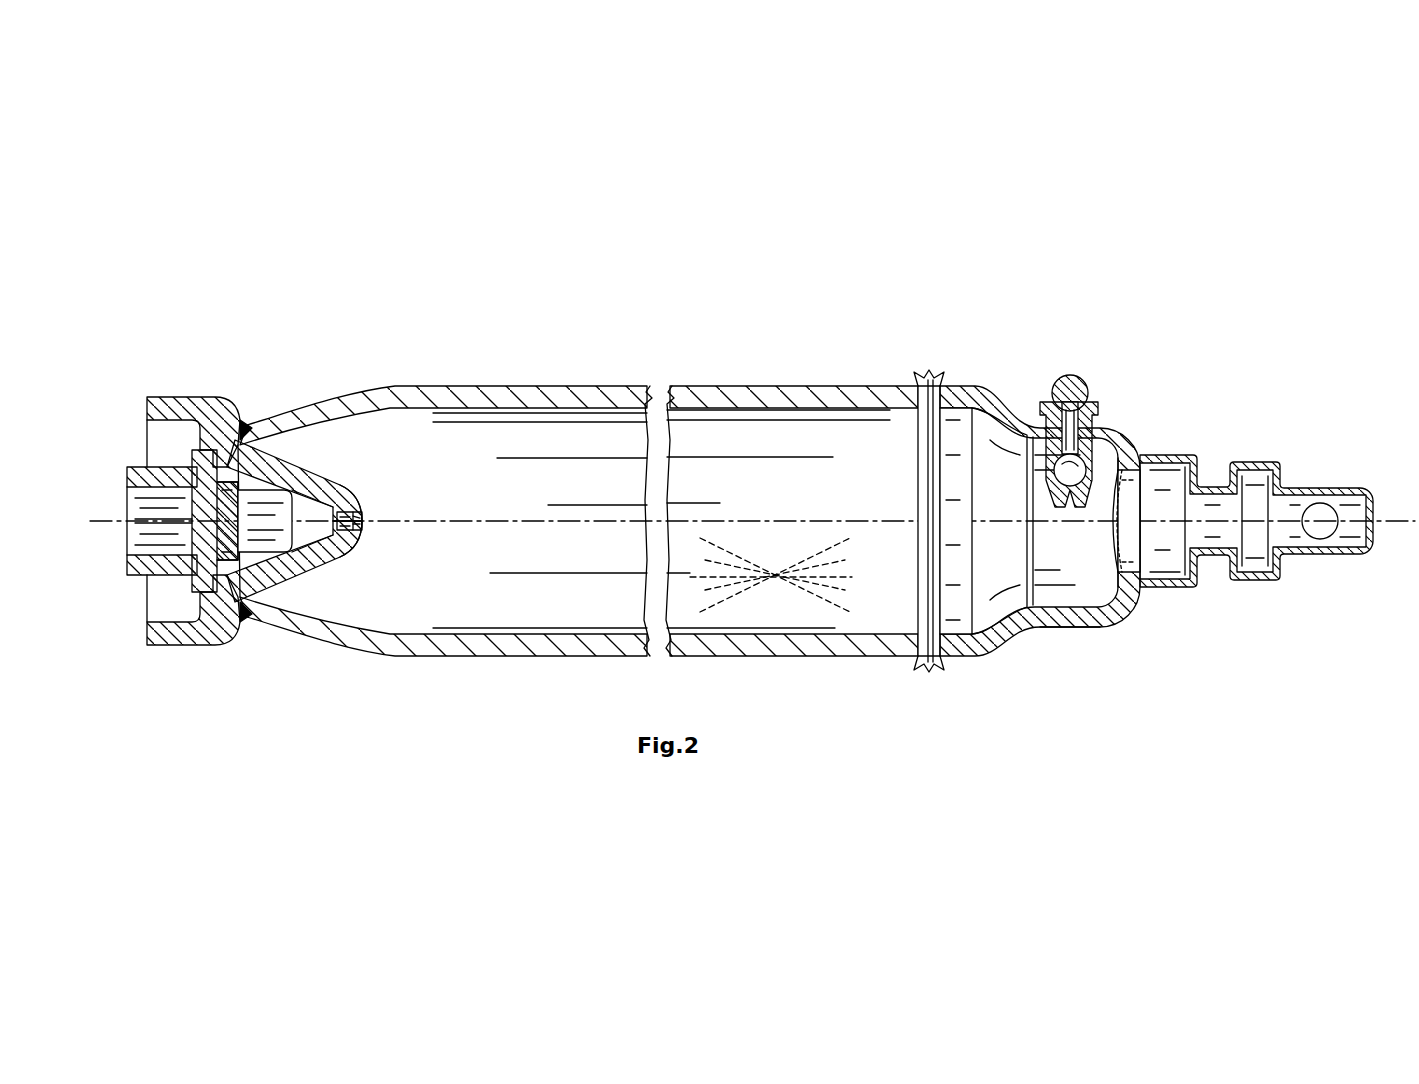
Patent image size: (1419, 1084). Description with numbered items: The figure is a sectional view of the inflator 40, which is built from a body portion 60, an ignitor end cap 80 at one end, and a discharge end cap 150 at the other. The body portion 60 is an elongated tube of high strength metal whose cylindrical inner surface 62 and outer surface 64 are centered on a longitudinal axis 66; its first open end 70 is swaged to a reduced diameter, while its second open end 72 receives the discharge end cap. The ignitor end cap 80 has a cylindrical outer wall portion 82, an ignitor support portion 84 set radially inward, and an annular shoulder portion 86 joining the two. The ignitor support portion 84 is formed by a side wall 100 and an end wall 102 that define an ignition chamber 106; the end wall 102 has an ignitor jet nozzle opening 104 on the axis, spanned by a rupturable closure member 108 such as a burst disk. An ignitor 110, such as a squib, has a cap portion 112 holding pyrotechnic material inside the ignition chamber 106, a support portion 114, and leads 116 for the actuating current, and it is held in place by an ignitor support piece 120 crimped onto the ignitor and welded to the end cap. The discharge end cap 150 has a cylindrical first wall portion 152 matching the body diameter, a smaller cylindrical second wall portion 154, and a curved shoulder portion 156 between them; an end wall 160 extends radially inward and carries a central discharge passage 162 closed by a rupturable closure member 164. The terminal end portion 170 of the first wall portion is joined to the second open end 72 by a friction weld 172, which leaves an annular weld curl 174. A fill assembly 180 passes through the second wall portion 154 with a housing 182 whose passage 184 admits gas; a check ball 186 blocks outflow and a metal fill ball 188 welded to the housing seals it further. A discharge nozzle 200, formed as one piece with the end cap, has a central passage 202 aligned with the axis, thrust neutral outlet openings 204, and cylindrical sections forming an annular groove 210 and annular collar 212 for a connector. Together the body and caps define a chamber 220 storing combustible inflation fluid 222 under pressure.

The inflator 40 is at (200, 312).
The body portion 60 is at (770, 397).
The cylindrical inner surface 62 is at (458, 632).
The outer surface 64 is at (593, 388).
The longitudinal axis 66 is at (473, 524).
The first open end 70 is at (272, 392).
The second open end 72 is at (923, 600).
The ignitor end cap 80 is at (165, 390).
The cylindrical outer wall portion 82 is at (150, 392).
The ignitor support portion 84 is at (257, 580).
The annular shoulder portion 86 is at (243, 600).
The side wall 100 is at (293, 593).
The end wall 102 is at (347, 493).
The ignitor jet nozzle opening 104 is at (342, 547).
The ignition chamber 106 is at (310, 507).
The rupturable closure member 108 is at (357, 520).
The ignitor 110 is at (263, 540).
The cap portion 112 is at (258, 578).
The support portion 114 is at (216, 500).
The leads 116 is at (130, 513).
The ignitor support piece 120 is at (157, 477).
The discharge end cap 150 is at (1113, 422).
The cylindrical first wall portion 152 is at (975, 640).
The cylindrical second wall portion 154 is at (1068, 620).
The curved shoulder portion 156 is at (1002, 632).
The end wall 160 is at (1130, 455).
The central discharge passage 162 is at (1133, 497).
The rupturable closure member 164 is at (1122, 528).
The terminal end portion 170 is at (937, 393).
The friction weld 172 is at (930, 668).
The annular weld curl 174 is at (943, 652).
The fill assembly 180 is at (1024, 381).
The housing 182 is at (1042, 395).
The passage 184 is at (990, 415).
The check ball 186 is at (1068, 473).
The metal fill ball 188 is at (1078, 377).
The discharge nozzle 200 is at (1260, 462).
The central passage 202 is at (1163, 540).
The outlet openings 204 is at (1323, 512).
The annular groove 210 is at (1210, 553).
The annular collar 212 is at (1277, 550).
The chamber 220 is at (708, 443).
The inflation fluid 222 is at (775, 587).